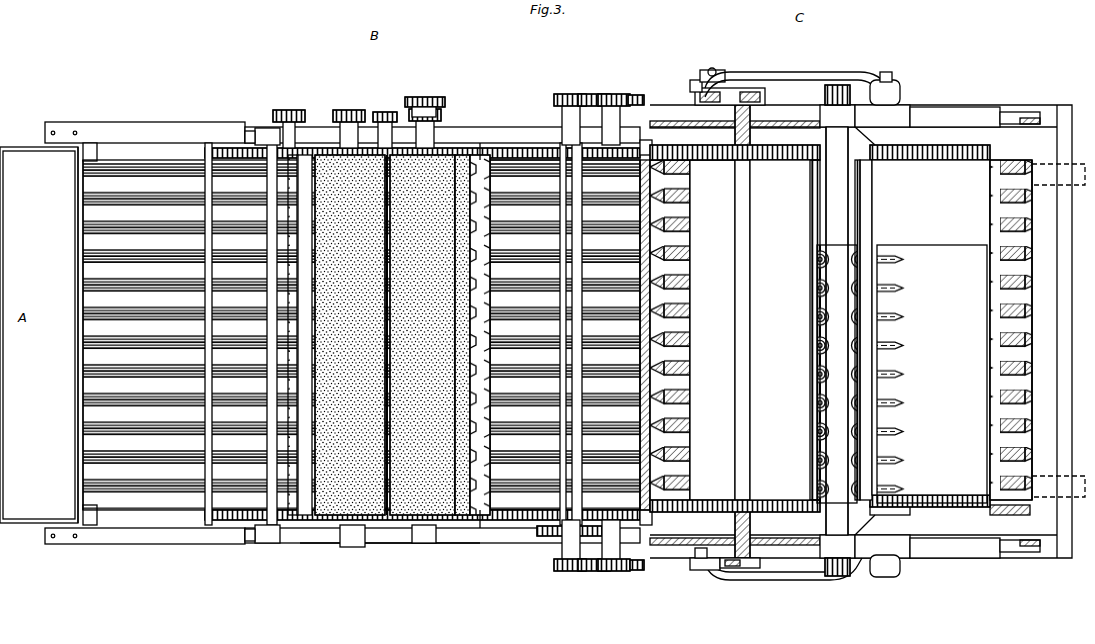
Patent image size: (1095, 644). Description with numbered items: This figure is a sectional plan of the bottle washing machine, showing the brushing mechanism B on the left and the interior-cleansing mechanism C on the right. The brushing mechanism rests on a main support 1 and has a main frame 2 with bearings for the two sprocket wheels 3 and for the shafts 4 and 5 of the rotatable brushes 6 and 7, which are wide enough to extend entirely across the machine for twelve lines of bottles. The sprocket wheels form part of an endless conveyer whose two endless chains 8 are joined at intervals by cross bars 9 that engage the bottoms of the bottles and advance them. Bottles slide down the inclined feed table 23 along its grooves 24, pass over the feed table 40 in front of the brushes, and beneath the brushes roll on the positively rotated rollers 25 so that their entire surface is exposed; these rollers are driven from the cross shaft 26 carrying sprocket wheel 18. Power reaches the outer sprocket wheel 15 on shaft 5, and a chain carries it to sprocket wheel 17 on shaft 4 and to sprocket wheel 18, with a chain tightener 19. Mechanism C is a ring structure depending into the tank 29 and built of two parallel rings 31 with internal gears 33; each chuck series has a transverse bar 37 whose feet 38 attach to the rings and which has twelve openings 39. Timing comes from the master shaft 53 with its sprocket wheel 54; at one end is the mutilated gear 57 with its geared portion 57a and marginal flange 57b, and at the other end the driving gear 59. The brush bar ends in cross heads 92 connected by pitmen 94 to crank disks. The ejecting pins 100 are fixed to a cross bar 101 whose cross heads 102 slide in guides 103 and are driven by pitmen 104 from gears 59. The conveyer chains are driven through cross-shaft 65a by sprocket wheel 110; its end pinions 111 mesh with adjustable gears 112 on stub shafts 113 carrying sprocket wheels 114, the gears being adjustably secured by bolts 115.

The main support 1 is at (218, 544).
The main frame 2 is at (380, 544).
The sprocket wheels 3 is at (236, 148).
The brush shaft 4 is at (350, 547).
The brush shaft 5 is at (426, 100).
The rotatable brush 6 is at (306, 556).
The rotatable brush 7 is at (394, 556).
The endless chains 8 is at (474, 148).
The cross bars 9 is at (208, 500).
The outer sprocket wheel 15 is at (430, 96).
The sprocket wheel 17 is at (342, 112).
The sprocket wheel 18 is at (288, 112).
The chain tightener 19 is at (385, 110).
The inclined chute or feed table 23 is at (128, 166).
The grooves 24 is at (83, 183).
The positively rotated rollers 25 is at (290, 412).
The cross shaft 26 is at (488, 300).
The tank 29 is at (1055, 558).
The metallic rings 31 is at (1037, 327).
The internal gears 33 is at (820, 326).
The transverse bar 37 is at (690, 334).
The feet 38 is at (680, 512).
The openings 39 is at (690, 205).
The feed table 40 is at (565, 335).
The master shaft 53 is at (750, 472).
The sprocket wheel 54 is at (770, 570).
The mutilated gear 57 is at (718, 88).
The active or geared portion 57a is at (692, 84).
The marginal flange 57b is at (690, 80).
The driving gear 59 is at (715, 570).
The cross-shaft 65a is at (560, 158).
The cross heads 92 is at (834, 331).
The pitmen 94 is at (882, 82).
The ejecting pins 100 is at (937, 205).
The cross bar 101 is at (872, 245).
The cross heads 102 is at (900, 108).
The guides 103 is at (965, 110).
The pitmen 104 is at (790, 72).
The sprocket wheel 110 is at (545, 536).
The pinions 111 is at (563, 98).
The gears 112 is at (596, 87).
The stub shafts 113 is at (612, 94).
The sprocket wheels 114 is at (646, 146).
The bolts 115 is at (640, 90).